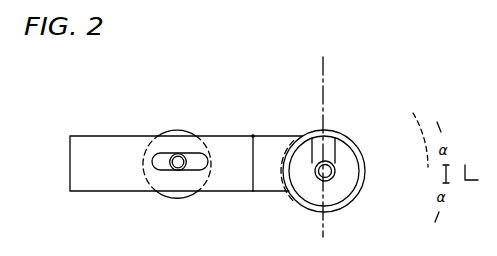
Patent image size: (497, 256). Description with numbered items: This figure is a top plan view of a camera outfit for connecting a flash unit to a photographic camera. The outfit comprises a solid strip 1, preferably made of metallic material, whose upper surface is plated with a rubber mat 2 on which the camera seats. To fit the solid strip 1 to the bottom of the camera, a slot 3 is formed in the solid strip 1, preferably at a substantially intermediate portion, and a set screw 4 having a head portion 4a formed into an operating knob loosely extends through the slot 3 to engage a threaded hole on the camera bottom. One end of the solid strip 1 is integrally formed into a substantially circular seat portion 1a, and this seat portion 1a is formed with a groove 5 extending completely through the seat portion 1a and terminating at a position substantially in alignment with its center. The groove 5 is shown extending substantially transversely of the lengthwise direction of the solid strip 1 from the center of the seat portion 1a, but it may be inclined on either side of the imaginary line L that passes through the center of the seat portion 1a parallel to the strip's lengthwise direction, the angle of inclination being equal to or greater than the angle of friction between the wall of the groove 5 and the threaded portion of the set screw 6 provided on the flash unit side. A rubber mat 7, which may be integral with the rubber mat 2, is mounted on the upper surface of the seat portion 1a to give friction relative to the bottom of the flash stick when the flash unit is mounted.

The solid strip 1 is at (257, 193).
The seat portion 1a is at (352, 202).
The rubber mat 2 is at (92, 178).
The slot 3 is at (156, 165).
The set screw 4 is at (183, 155).
The head portion 4a is at (170, 130).
The groove 5 is at (318, 148).
The set screw 6 is at (323, 181).
The rubber mat 7 is at (277, 189).